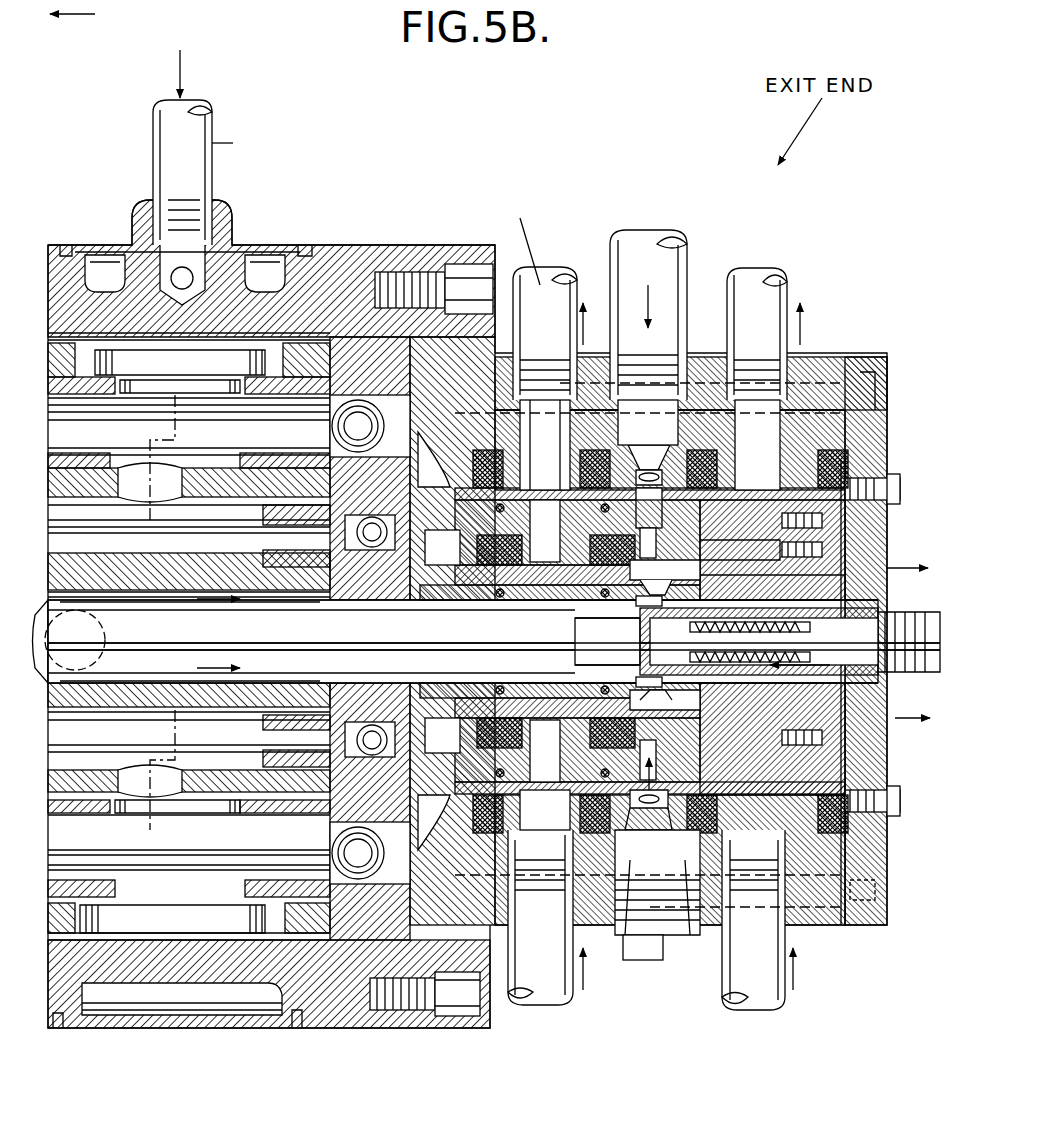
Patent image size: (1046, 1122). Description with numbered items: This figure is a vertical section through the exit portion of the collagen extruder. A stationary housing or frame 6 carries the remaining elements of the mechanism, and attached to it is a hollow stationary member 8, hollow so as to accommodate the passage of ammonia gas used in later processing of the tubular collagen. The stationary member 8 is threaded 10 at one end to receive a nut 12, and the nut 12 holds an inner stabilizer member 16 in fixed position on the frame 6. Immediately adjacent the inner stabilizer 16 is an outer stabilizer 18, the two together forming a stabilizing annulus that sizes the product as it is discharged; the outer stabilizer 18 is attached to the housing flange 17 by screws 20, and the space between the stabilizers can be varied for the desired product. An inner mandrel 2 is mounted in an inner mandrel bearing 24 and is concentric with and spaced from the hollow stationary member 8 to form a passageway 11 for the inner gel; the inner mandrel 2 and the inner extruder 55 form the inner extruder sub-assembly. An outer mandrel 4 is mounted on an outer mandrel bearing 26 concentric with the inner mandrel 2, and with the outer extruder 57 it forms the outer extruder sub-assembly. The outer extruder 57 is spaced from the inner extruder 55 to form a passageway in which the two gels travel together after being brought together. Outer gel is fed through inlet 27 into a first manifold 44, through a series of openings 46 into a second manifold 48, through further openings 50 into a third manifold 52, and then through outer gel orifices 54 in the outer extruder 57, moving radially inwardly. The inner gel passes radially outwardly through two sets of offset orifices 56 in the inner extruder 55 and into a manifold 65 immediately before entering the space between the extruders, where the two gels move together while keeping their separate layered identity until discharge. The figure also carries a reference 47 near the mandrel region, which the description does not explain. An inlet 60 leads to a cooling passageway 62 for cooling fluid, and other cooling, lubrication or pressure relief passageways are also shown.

The inner mandrel 2 is at (300, 690).
The outer mandrel 4 is at (297, 470).
The stationary housing or frame 6 is at (355, 268).
The hollow stationary member 8 is at (380, 644).
The threaded end 10 is at (920, 655).
The passageway for inner gel 11 is at (163, 668).
The nut 12 is at (503, 322).
The inner stabilizer member 16 is at (872, 591).
The housing flange 17 is at (862, 368).
The outer stabilizer 18 is at (870, 526).
The screws 20 is at (887, 478).
The inner mandrel bearing 24 is at (380, 517).
The outer mandrel bearing 26 is at (365, 392).
The inlet 27 is at (672, 266).
The first manifold 44 is at (637, 458).
The openings 46 is at (678, 470).
The passage 47 is at (640, 603).
The second manifold 48 is at (643, 465).
The openings 50 is at (648, 495).
The third manifold 52 is at (634, 523).
The outer gel orifices 54 is at (652, 548).
The inner extruder 55 is at (772, 582).
The orifices 56 is at (606, 592).
The outer extruder 57 is at (740, 546).
The inlet 60 is at (160, 118).
The cooling passageway 62 is at (265, 262).
The manifold 65 is at (672, 562).